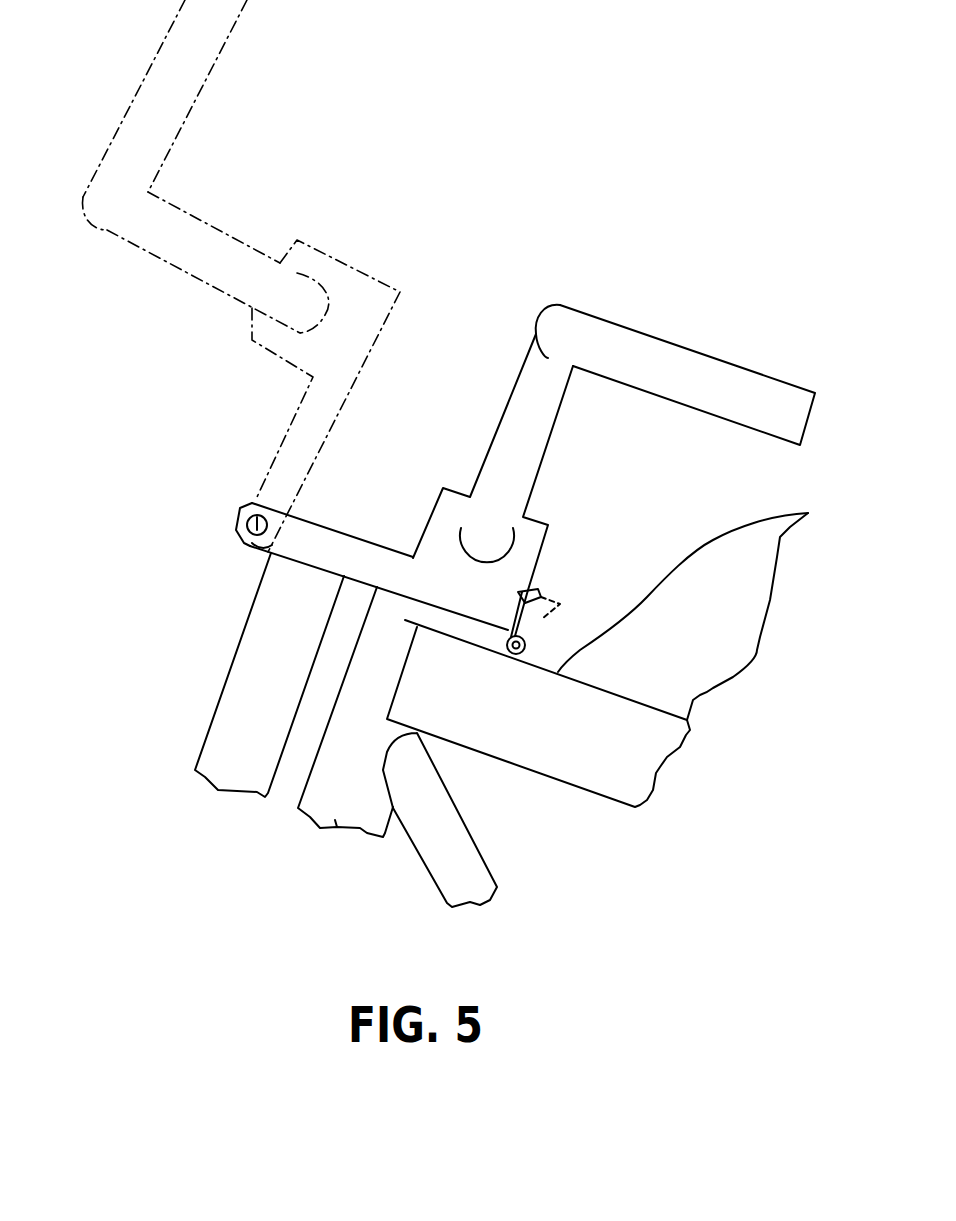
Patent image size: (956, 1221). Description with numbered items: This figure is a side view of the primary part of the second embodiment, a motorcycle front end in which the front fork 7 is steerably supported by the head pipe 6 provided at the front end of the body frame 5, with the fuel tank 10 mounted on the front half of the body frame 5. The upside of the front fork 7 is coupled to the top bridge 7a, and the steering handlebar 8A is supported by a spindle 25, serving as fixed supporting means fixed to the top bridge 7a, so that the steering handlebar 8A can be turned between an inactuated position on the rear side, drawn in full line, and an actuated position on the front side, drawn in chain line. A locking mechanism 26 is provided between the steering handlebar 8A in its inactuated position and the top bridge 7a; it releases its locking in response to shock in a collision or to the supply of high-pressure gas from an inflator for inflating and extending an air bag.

The body frame 5 is at (518, 735).
The head pipe 6 is at (336, 829).
The front fork 7 is at (226, 651).
The top bridge 7a is at (295, 568).
The steering handlebar 8A is at (642, 350).
The fuel tank 10 is at (709, 538).
The spindle 25 is at (254, 503).
The locking mechanism 26 is at (560, 603).